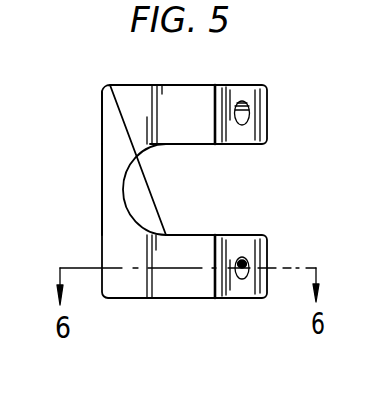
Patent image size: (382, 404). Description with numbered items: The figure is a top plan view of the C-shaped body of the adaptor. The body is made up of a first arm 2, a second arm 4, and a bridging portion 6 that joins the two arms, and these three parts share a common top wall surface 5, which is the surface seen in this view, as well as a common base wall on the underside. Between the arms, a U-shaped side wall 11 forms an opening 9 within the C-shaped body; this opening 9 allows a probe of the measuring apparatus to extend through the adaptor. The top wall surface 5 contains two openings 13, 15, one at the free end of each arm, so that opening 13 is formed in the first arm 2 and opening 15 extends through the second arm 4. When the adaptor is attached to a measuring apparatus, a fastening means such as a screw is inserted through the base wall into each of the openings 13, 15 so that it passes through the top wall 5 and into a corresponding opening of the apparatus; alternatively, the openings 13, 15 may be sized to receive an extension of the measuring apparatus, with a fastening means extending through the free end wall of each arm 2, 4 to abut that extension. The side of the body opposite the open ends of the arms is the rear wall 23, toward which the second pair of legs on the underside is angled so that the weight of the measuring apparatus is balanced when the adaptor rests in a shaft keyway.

The first arm 2 is at (148, 84).
The top wall surface 5 is at (192, 97).
The second arm 4 is at (137, 298).
The rear wall 23 is at (102, 127).
The bridging portion 6 is at (110, 183).
The opening 9 is at (198, 208).
The U-shaped side wall 11 is at (163, 145).
The opening 13 is at (249, 118).
The opening 15 is at (246, 266).